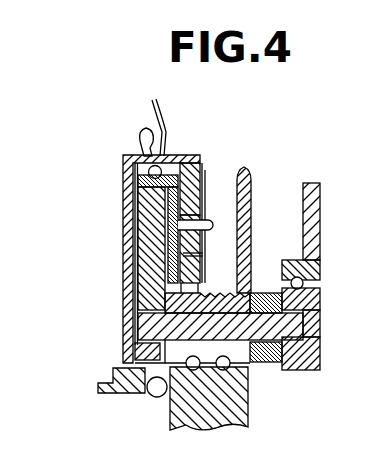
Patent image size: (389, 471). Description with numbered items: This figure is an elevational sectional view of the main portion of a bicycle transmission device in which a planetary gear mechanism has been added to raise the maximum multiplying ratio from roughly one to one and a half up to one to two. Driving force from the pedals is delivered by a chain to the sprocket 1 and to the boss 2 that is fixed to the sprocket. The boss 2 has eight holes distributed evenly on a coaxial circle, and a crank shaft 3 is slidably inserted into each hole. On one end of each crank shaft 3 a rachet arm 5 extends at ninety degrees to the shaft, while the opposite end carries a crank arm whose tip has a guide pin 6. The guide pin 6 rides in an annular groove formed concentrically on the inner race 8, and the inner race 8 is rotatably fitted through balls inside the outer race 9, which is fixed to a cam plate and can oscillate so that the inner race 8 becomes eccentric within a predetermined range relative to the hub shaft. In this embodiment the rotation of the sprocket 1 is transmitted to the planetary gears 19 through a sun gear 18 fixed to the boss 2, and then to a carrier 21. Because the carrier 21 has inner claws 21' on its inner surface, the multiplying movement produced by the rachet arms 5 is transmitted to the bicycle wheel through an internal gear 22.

The sprocket 1 is at (250, 197).
The boss 2 is at (253, 367).
The crank shaft 3 is at (263, 325).
The rachet arm 5 is at (130, 237).
The guide pin 6 is at (303, 347).
The inner race 8 is at (320, 300).
The outer race 9 is at (317, 273).
The sun gear 18 is at (193, 263).
The planetary gears 19 is at (205, 180).
The carrier 21 is at (105, 235).
The inner claws 21' is at (105, 174).
The internal gear 22 is at (190, 167).